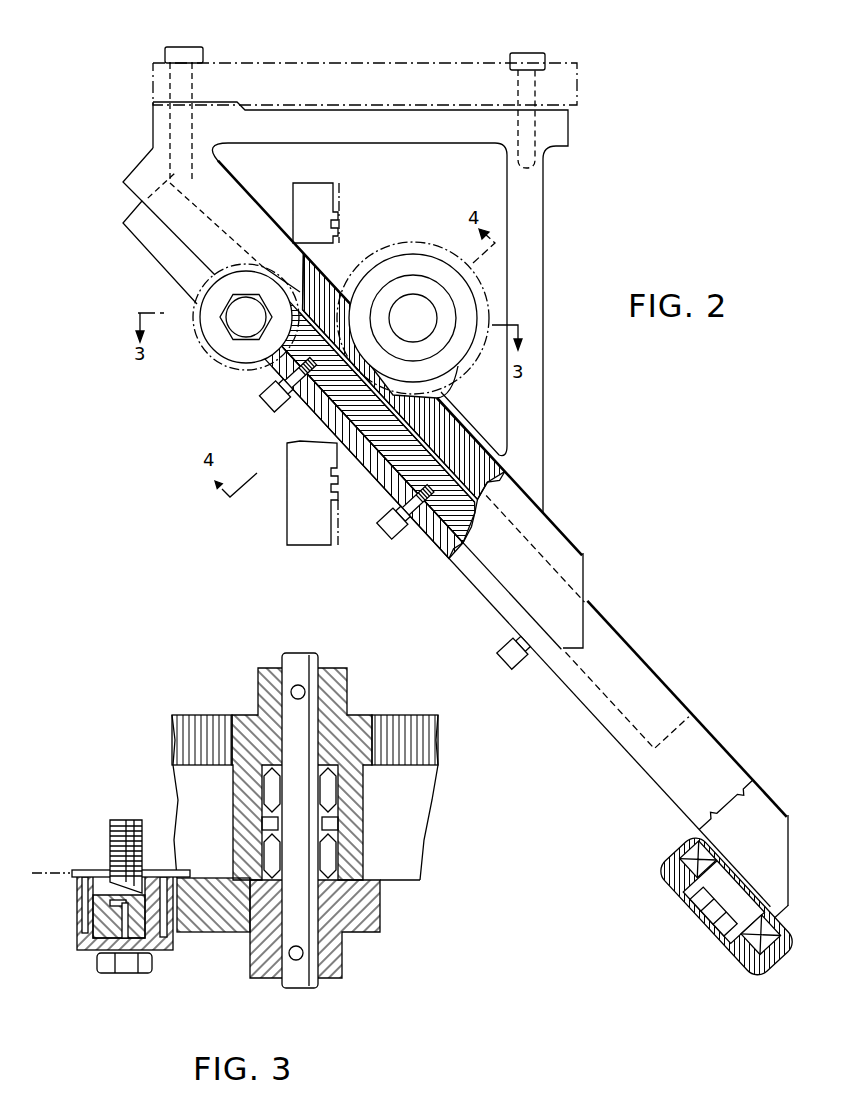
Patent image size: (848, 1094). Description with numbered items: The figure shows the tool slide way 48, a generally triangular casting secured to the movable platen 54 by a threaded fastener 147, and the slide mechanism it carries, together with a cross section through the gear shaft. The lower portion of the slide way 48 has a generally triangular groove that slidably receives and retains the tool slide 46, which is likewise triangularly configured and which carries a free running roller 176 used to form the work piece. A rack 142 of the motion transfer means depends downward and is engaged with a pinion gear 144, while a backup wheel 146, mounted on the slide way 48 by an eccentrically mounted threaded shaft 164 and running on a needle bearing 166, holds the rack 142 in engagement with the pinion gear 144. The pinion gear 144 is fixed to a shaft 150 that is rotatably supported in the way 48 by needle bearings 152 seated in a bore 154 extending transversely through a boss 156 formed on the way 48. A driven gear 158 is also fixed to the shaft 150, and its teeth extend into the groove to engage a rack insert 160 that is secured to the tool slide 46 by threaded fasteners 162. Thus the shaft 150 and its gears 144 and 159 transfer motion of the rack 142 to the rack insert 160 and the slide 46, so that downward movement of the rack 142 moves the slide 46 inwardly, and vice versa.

In FIG. 2, the tool slide 46 is at (712, 732).
In FIG. 2, the tool slide way 48 is at (544, 463).
In FIG. 2, the platen 54 is at (467, 66).
In FIG. 2, the rack 142 is at (338, 196).
In FIG. 3, the rack 142 is at (192, 932).
In FIG. 3, the pinion gear 144 is at (343, 970).
In FIG. 2, the backup wheel 146 is at (222, 362).
In FIG. 3, the backup wheel 146 is at (163, 958).
In FIG. 2, the threaded fastener 147 is at (536, 58).
In FIG. 3, the shaft 150 is at (295, 653).
In FIG. 3, the needle bearing 152 is at (336, 865).
In FIG. 3, the bore 154 is at (338, 790).
In FIG. 2, the boss 156 is at (418, 254).
In FIG. 3, the boss 156 is at (340, 828).
In FIG. 2, the driven gear 158 is at (371, 262).
In FIG. 3, the driven gear 158 is at (348, 688).
In FIG. 2, the gear 159 is at (441, 392).
In FIG. 2, the rack insert 160 is at (610, 626).
In FIG. 3, the rack insert 160 is at (406, 715).
In FIG. 2, the threaded fastener 162 is at (268, 404).
In FIG. 3, the threaded shaft 164 is at (110, 838).
In FIG. 3, the needle bearing 166 is at (165, 870).
In FIG. 2, the free running roller 176 is at (763, 990).